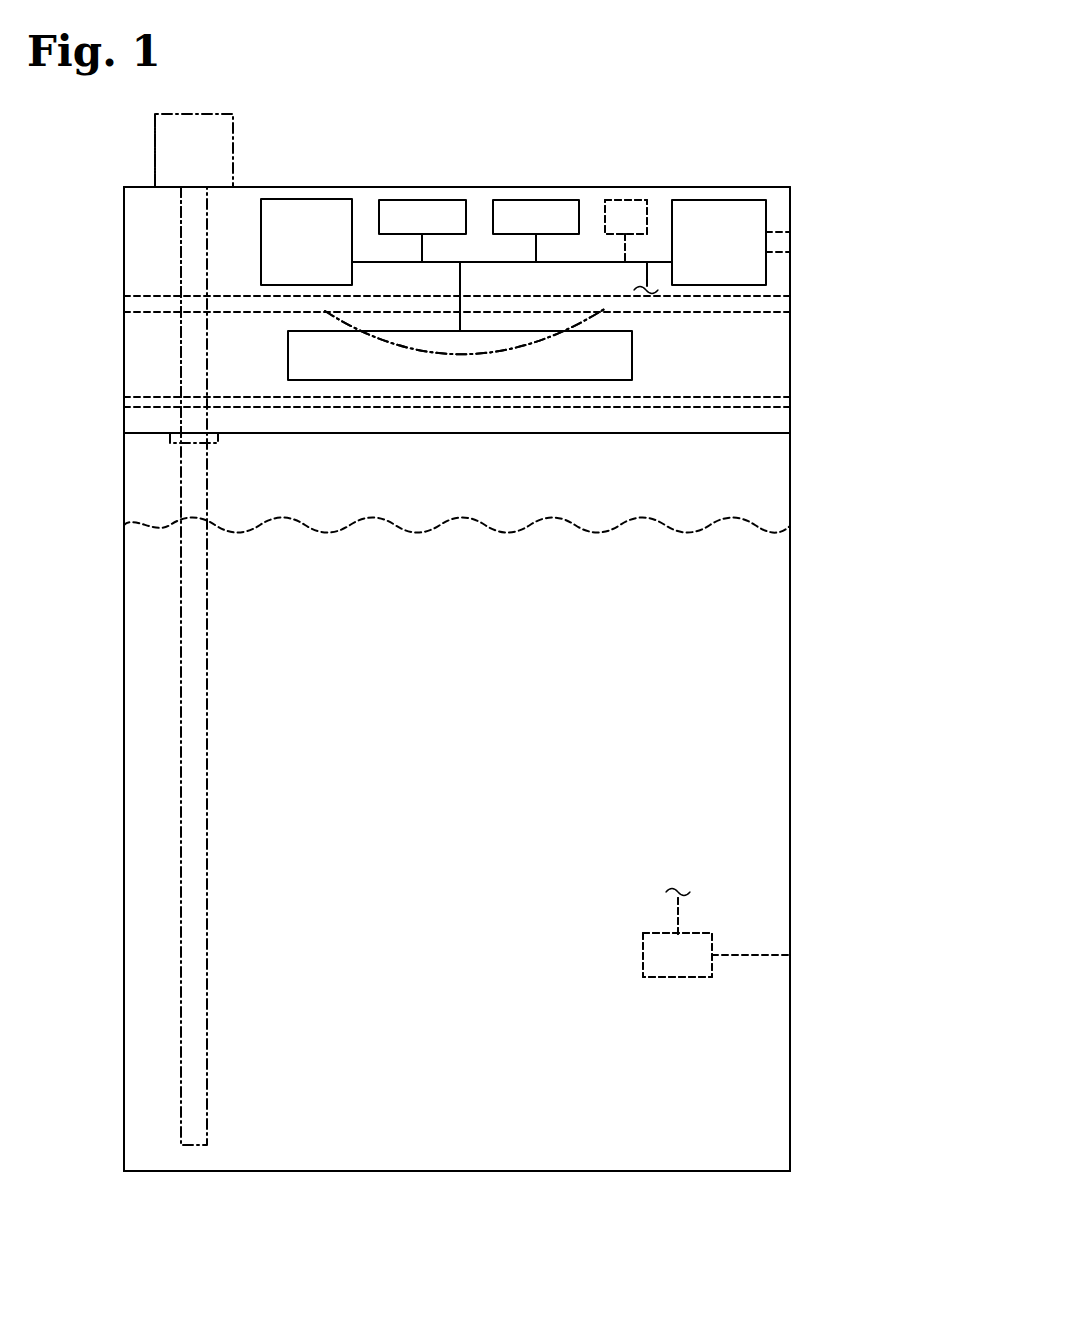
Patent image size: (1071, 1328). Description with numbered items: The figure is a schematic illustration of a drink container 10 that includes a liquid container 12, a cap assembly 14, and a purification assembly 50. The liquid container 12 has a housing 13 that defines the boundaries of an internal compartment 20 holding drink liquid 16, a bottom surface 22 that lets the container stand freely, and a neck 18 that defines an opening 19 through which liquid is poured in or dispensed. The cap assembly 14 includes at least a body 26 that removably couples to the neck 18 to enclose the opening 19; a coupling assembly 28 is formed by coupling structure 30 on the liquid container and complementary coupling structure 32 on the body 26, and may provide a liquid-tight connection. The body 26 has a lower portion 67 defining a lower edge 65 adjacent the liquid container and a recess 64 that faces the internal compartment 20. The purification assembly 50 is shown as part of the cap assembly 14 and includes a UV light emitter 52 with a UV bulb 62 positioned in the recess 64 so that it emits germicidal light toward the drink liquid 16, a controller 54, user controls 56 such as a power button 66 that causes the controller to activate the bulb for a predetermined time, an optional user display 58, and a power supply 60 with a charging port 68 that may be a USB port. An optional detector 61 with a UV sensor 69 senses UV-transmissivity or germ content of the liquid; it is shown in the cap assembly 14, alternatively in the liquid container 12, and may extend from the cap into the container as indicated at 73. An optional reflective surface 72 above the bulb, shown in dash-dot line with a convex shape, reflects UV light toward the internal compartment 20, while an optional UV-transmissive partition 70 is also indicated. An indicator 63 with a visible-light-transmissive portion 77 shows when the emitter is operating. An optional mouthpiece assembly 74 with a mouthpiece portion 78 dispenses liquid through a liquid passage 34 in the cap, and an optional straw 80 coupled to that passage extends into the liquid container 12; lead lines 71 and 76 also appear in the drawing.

The drink container 10 is at (804, 103).
The liquid container 12 is at (815, 472).
The housing 13 is at (798, 560).
The cap assembly 14 is at (62, 292).
The drink liquid 16 is at (752, 741).
The neck 18 is at (756, 427).
The opening 19 is at (640, 425).
The internal compartment 20 is at (752, 646).
The bottom surface 22 is at (694, 1173).
The body 26 is at (742, 179).
The coupling assembly 28 is at (121, 434).
The coupling structure 30 is at (365, 430).
The coupling structure 32 is at (412, 437).
The liquid passage 34 is at (179, 244).
The purification assembly 50 is at (815, 458).
The UV light emitter 52 is at (636, 352).
The controller 54 is at (310, 198).
The user controls 56 is at (408, 199).
The user display 58 is at (525, 199).
The power supply 60 is at (767, 226).
The detector 61 is at (634, 204).
The UV bulb 62 is at (606, 326).
The indicator 63 is at (121, 427).
The recess 64 is at (773, 368).
The lower edge 65 is at (543, 437).
The power button 66 is at (448, 206).
The lower portion 67 is at (766, 348).
The charging port 68 is at (790, 243).
The UV sensor 69 is at (618, 199).
The UV-transmissive partition 70 is at (145, 396).
The sensor lead 71 is at (640, 215).
The reflective surface 72 is at (392, 340).
The detector extension 73 is at (643, 270).
The mouthpiece assembly 74 is at (202, 108).
The wire 76 is at (235, 331).
The visible-light-transmissive portion 77 is at (245, 420).
The mouthpiece portion 78 is at (156, 160).
The straw 80 is at (209, 786).